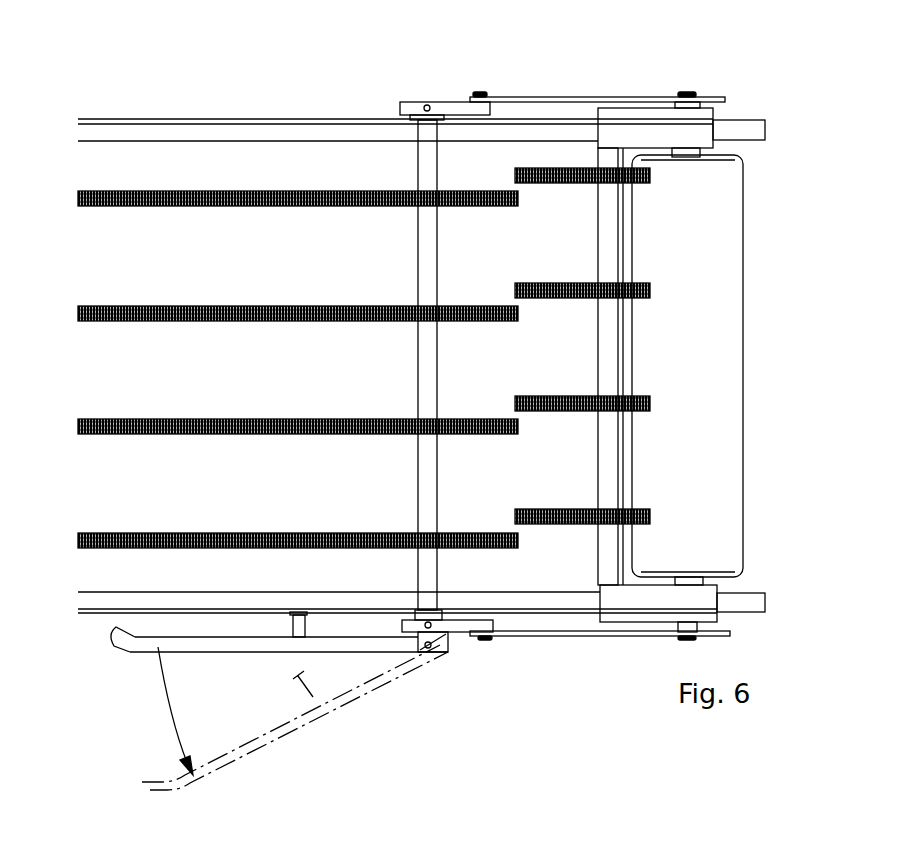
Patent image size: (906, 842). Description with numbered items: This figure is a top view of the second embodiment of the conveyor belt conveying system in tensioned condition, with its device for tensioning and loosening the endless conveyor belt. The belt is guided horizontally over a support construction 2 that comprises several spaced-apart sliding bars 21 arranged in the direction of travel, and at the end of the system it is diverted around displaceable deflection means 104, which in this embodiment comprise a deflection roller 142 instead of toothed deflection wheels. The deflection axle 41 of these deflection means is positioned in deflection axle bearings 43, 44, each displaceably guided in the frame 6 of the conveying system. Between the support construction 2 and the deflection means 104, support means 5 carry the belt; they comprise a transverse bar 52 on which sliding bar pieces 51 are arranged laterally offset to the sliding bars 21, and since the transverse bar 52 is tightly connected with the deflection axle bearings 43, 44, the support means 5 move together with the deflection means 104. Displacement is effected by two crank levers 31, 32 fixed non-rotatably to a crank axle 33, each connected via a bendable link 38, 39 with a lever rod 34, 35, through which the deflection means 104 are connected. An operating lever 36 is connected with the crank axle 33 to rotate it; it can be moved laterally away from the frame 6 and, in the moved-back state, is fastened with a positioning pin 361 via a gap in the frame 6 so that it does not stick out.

The support construction 2 is at (148, 170).
The frame 6 is at (165, 130).
The sliding bars 21 is at (195, 200).
The support means 5 is at (560, 245).
The crank axle 33 is at (425, 160).
The crank lever 32 is at (400, 104).
The lever rod 35 is at (612, 97).
The link 39 is at (485, 95).
The transverse bar 52 is at (600, 222).
The deflection axle bearing 44 is at (692, 136).
The deflection roller 142 is at (723, 493).
The displaceable deflection means 104 is at (770, 372).
The sliding bar pieces 51 is at (650, 290).
The deflection axle 41 is at (740, 577).
The deflection axle bearing 43 is at (705, 598).
The lever rod 34 is at (590, 640).
The link 38 is at (485, 640).
The crank lever 31 is at (462, 630).
The operating lever 36 is at (138, 650).
The positioning pin 361 is at (287, 628).